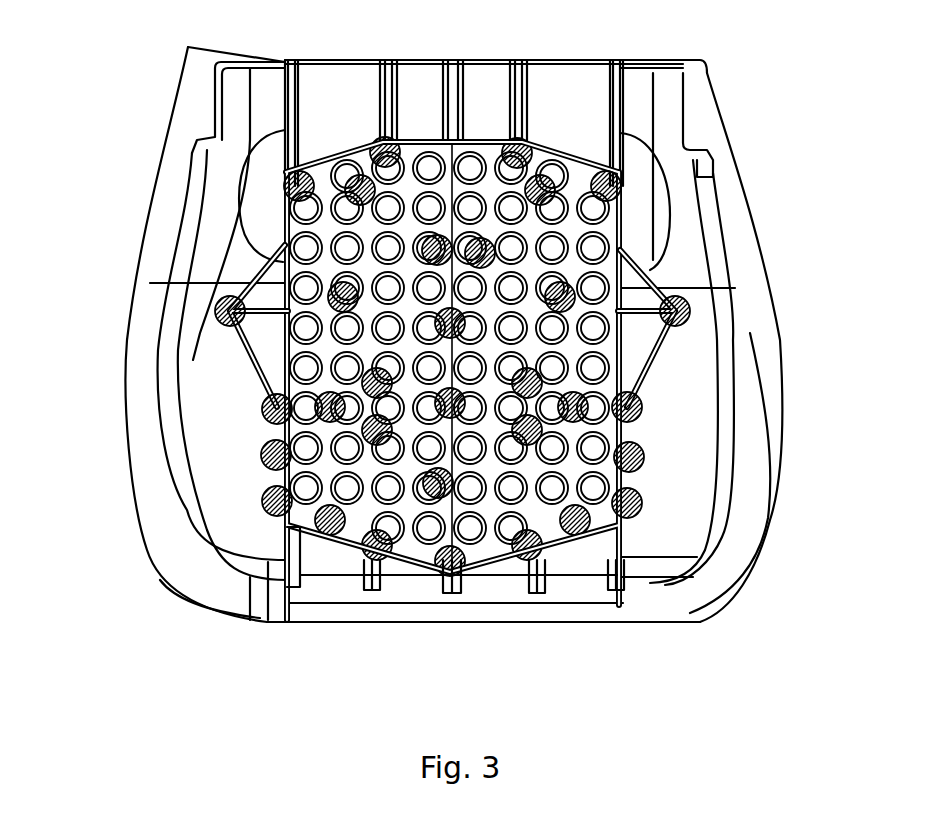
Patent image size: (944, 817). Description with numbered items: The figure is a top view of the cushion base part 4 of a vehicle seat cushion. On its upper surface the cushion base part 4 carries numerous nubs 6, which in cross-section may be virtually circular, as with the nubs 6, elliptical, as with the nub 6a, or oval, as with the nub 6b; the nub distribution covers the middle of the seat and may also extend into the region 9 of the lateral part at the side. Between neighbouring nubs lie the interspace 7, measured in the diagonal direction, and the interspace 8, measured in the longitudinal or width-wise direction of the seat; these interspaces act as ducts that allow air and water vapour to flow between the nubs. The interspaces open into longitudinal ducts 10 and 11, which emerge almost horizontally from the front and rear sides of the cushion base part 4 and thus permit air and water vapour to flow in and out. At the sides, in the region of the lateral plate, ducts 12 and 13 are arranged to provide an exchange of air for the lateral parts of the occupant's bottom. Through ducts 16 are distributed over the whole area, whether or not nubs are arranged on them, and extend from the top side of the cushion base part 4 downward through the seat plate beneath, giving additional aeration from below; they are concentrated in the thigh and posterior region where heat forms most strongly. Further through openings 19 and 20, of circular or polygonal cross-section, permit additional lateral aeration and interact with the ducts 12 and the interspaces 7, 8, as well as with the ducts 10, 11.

The cushion base part 4 is at (856, 323).
The nub 6 is at (283, 155).
The elliptical nub 6a is at (487, 590).
The oval nub 6b is at (480, 160).
The interspace in the diagonal direction 7 is at (283, 190).
The interspace in the longitudinal or width-wise direction 8 is at (283, 280).
The region of the lateral part 9 is at (153, 412).
The longitudinal duct 10 is at (265, 620).
The longitudinal duct 11 is at (290, 62).
The lateral duct 12 is at (287, 250).
The lateral duct 13 is at (653, 270).
The through duct 16 is at (225, 318).
The lateral through opening 19 is at (228, 306).
The lateral through opening 20 is at (265, 407).